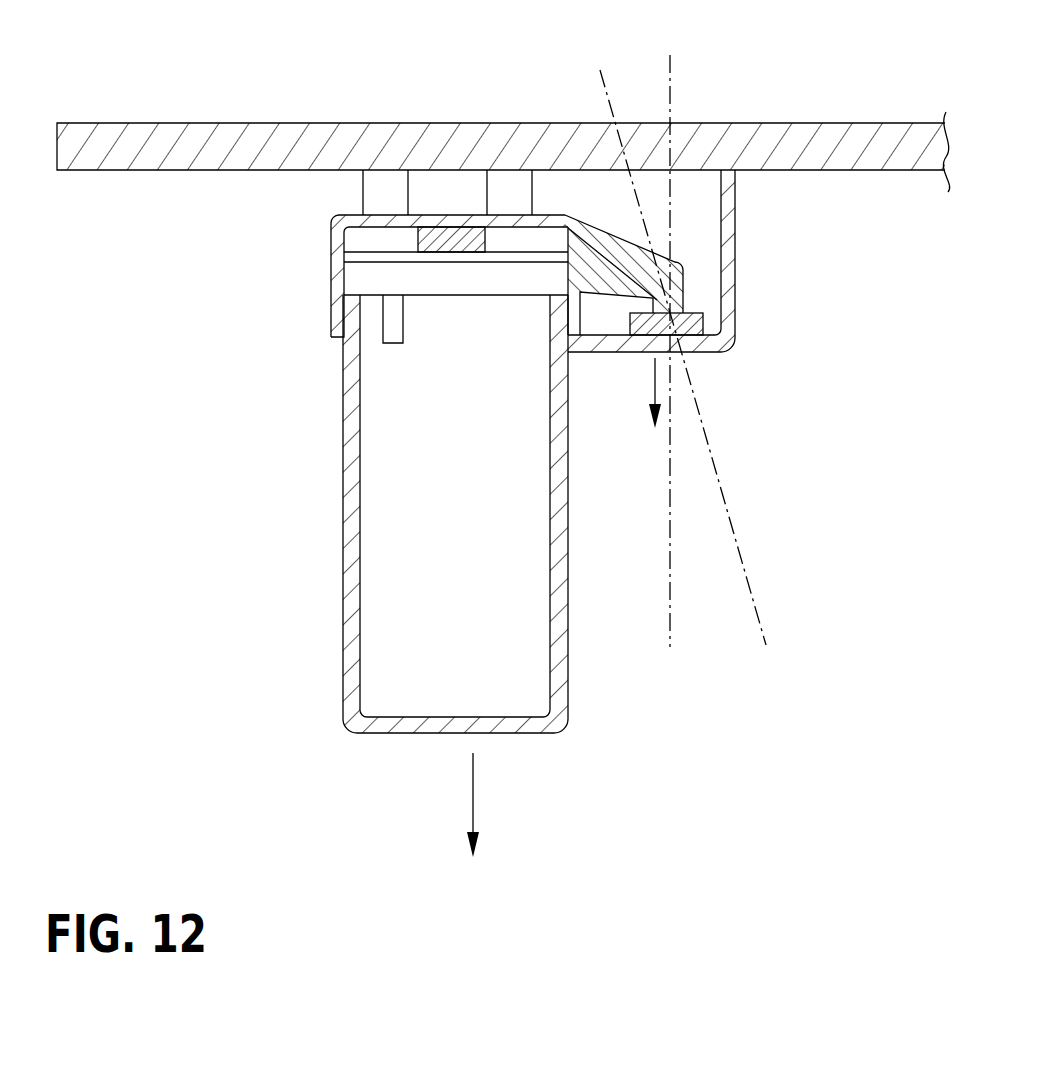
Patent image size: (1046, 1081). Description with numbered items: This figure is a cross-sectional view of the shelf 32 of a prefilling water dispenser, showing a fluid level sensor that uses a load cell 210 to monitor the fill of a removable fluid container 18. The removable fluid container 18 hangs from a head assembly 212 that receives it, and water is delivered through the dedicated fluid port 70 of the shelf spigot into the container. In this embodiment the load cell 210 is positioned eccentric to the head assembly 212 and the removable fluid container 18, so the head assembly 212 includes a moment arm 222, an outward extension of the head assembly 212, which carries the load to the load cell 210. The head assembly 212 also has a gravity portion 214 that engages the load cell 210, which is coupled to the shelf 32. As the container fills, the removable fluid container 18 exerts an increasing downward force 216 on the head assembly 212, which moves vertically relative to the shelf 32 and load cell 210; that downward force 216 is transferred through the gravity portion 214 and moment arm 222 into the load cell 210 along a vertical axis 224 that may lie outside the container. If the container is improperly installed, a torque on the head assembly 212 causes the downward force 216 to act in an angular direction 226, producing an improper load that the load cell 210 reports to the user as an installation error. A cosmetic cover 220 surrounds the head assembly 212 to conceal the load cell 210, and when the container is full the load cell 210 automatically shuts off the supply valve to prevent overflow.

The removable fluid container 18 is at (343, 475).
The shelf 32 is at (820, 112).
The dedicated fluid port 70 is at (372, 350).
The load cell 210 is at (437, 229).
The head assembly 212 is at (332, 272).
The gravity portion 214 is at (465, 248).
The downward force 216 is at (653, 383).
The cosmetic cover 220 is at (735, 256).
The moment arm 222 is at (604, 260).
The vertical axis 224 is at (672, 588).
The angular direction 226 is at (718, 472).